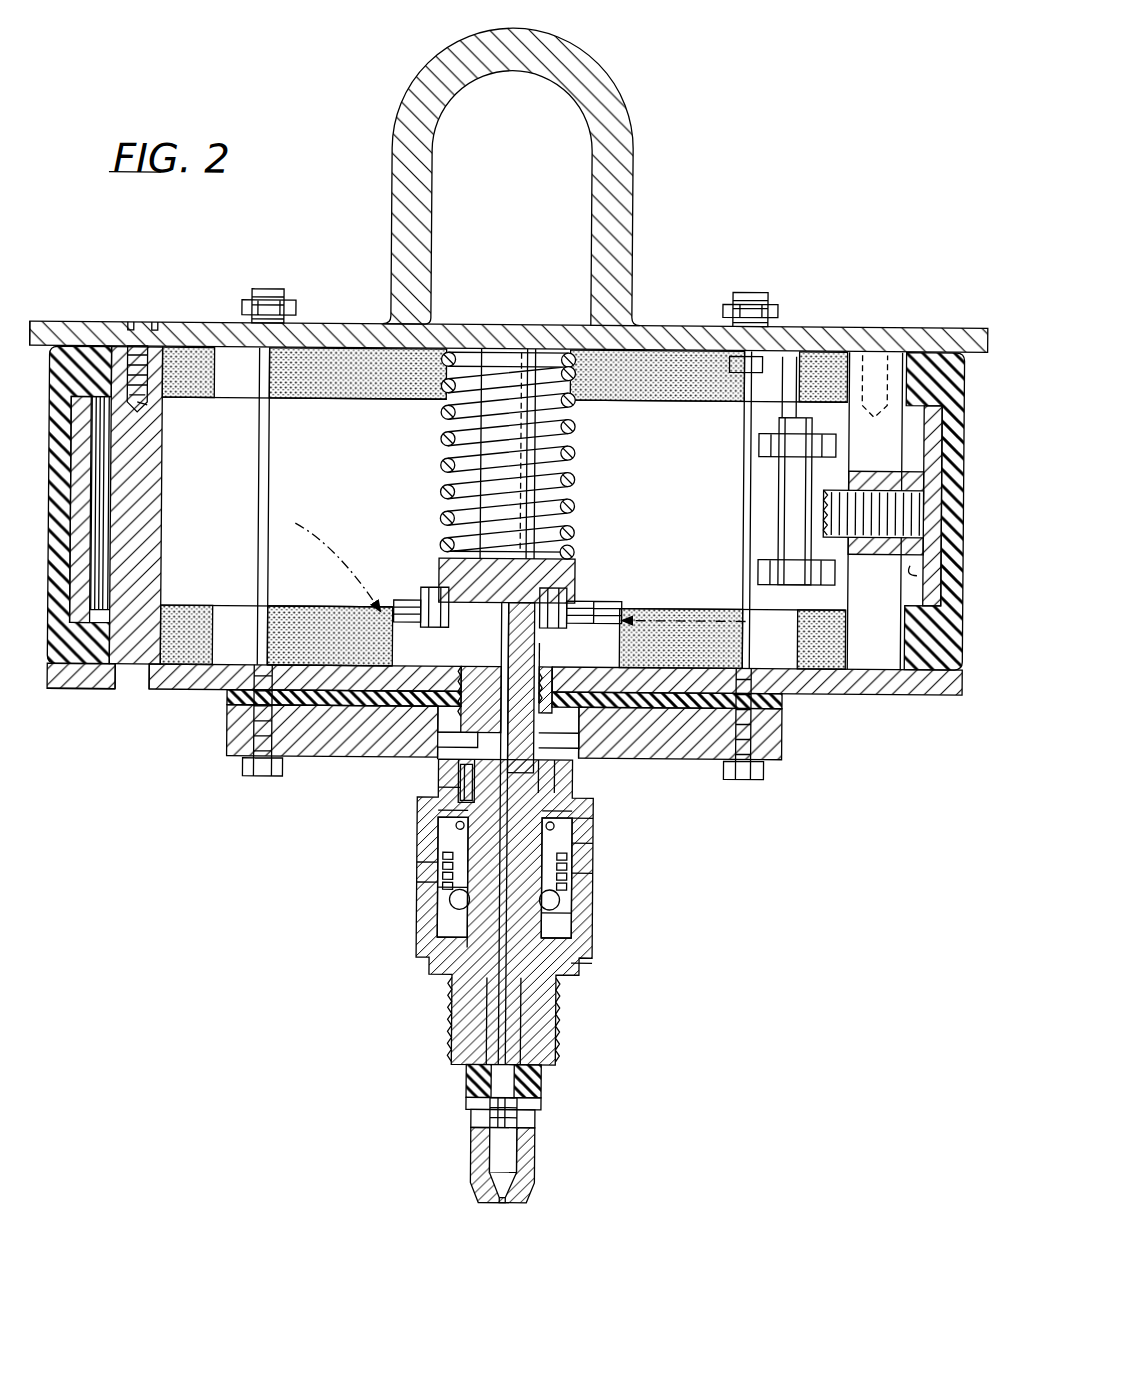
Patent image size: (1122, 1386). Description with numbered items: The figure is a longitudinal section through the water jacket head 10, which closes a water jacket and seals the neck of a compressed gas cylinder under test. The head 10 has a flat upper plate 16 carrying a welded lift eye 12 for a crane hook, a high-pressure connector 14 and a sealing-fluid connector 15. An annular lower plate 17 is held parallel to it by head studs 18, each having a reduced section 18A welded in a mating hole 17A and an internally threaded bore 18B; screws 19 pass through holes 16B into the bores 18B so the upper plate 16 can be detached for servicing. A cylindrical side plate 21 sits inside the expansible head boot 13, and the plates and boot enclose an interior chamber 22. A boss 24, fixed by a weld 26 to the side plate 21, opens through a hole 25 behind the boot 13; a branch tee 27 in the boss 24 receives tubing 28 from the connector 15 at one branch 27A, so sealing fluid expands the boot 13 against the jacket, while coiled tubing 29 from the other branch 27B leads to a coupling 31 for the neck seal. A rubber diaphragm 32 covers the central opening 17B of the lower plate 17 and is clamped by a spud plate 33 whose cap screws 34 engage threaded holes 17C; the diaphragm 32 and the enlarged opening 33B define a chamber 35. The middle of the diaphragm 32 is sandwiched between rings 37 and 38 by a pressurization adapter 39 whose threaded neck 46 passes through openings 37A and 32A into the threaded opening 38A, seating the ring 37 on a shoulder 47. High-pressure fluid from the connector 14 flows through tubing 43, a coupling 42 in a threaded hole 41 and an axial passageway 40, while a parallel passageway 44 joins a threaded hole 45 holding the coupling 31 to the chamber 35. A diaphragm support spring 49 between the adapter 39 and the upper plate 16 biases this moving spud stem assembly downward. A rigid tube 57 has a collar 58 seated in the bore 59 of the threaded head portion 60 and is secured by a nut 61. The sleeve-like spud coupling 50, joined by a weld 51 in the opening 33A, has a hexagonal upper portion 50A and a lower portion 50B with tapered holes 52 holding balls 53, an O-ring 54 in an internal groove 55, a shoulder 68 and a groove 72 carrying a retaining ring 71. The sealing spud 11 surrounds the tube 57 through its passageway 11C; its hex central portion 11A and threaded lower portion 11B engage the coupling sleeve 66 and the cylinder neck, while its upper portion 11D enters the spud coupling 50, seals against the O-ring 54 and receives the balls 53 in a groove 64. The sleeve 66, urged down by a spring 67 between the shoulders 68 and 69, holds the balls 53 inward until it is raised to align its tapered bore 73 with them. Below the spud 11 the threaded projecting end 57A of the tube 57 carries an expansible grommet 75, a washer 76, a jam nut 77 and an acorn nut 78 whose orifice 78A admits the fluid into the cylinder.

The water jacket head 10 is at (718, 196).
The sealing spud 11 is at (450, 968).
The central portion of sealing spud 11A is at (579, 966).
The lower portion of sealing spud 11B is at (550, 1028).
The passageway 11C is at (496, 1026).
The upper portion of sealing spud 11D is at (578, 840).
The lift eye 12 is at (603, 88).
The head boot 13 is at (66, 536).
The connector 14 is at (290, 292).
The connector 15 is at (748, 296).
The upper plate 16 is at (352, 324).
The holes 16B is at (132, 322).
The lower plate 17 is at (152, 664).
The mating hole 17A is at (135, 689).
The central opening 17B is at (326, 664).
The threaded holes 17C is at (240, 704).
The head studs 18 is at (266, 456).
The reduced diameter section 18A is at (125, 689).
The internally threaded bore 18B is at (148, 405).
The screws 19 is at (150, 322).
The side plate 21 is at (76, 484).
The interior chamber 22 is at (622, 488).
The coupling or boss 24 is at (878, 470).
The hole 25 is at (935, 517).
The weld 26 is at (922, 568).
The male branch tee 27 is at (782, 486).
The branch of tee 27A is at (760, 440).
The other branch of tee 27B is at (782, 565).
The tubing 28 is at (730, 362).
The tubing 29 is at (700, 617).
The coupling 31 is at (596, 596).
The diaphragm 32 is at (792, 712).
The axial opening 32A is at (667, 713).
The spud plate 33 is at (280, 770).
The central opening 33A is at (441, 755).
The enlarged central opening 33B is at (344, 688).
The hex head cap screws 34 is at (240, 742).
The chamber 35 is at (623, 733).
The ring 37 is at (668, 670).
The axial opening 37A is at (480, 697).
The ring 38 is at (578, 736).
The threaded opening 38A is at (441, 738).
The pressurization adapter 39 is at (562, 573).
The passageway 40 is at (505, 646).
The threaded hole 41 is at (439, 592).
The coupling 42 is at (423, 604).
The tubing 43 is at (304, 522).
The passageway 44 is at (544, 658).
The threaded hole 45 is at (562, 598).
The neck portion 46 is at (439, 722).
The shoulder 47 is at (562, 676).
The diaphragm support spring 49 is at (444, 438).
The spud coupling 50 is at (440, 842).
The upper portion of spud coupling 50A is at (434, 808).
The lower portion of spud coupling 50B is at (574, 864).
The weld 51 is at (442, 790).
The tapered holes 52 is at (564, 895).
The balls 53 is at (457, 912).
The O-ring 54 is at (578, 816).
The internal groove 55 is at (458, 824).
The tube 57 is at (514, 1002).
The projecting end of tube 57A is at (525, 1136).
The collar 58 is at (582, 797).
The axial bore 59 is at (549, 780).
The head portion 60 is at (562, 769).
The nut 61 is at (480, 772).
The circumferential groove 64 is at (574, 912).
The coupling sleeve 66 is at (421, 876).
The spring 67 is at (578, 880).
The shoulder 68 is at (444, 854).
The shoulder 69 is at (452, 890).
The retaining ring 71 is at (574, 934).
The circumferential groove 72 is at (436, 940).
The tapered bore 73 is at (586, 960).
The expansible grommet 75 is at (548, 1079).
The washer 76 is at (548, 1102).
The jam nut 77 is at (476, 1118).
The acorn nut 78 is at (477, 1162).
The orifice 78A is at (509, 1202).